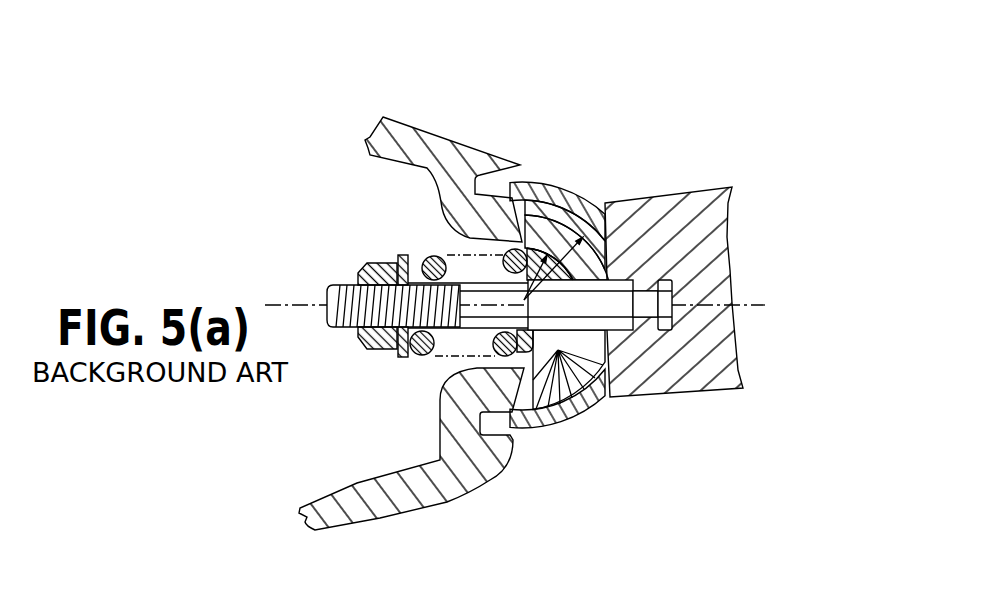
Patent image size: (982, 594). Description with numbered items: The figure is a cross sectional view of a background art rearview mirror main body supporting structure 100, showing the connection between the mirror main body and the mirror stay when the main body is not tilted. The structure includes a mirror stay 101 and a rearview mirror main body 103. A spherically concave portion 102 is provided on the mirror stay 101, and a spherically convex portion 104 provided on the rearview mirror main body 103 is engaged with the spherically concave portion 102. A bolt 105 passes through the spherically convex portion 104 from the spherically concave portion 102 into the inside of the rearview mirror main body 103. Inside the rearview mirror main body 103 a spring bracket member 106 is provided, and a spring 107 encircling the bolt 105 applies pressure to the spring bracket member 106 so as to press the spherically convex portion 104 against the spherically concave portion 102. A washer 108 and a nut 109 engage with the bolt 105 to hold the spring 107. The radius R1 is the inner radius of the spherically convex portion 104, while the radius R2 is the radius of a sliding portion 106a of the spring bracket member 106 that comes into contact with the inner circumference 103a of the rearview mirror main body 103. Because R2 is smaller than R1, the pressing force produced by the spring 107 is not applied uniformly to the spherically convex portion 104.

The rearview mirror main body supporting structure 100 is at (736, 97).
The mirror stay 101 is at (712, 192).
The spherically concave portion 102 is at (615, 260).
The rearview mirror main body 103 is at (412, 130).
The inner circumference 103a is at (531, 372).
The spherically convex portion 104 is at (560, 210).
The bolt 105 is at (322, 290).
The spring bracket member 106 is at (558, 350).
The sliding portion 106a is at (525, 300).
The spring 107 is at (428, 256).
The washer 108 is at (402, 358).
The nut 109 is at (357, 345).
The inner radius of the spherically convex portion R1 is at (538, 262).
The radius of the sliding portion R2 is at (540, 272).